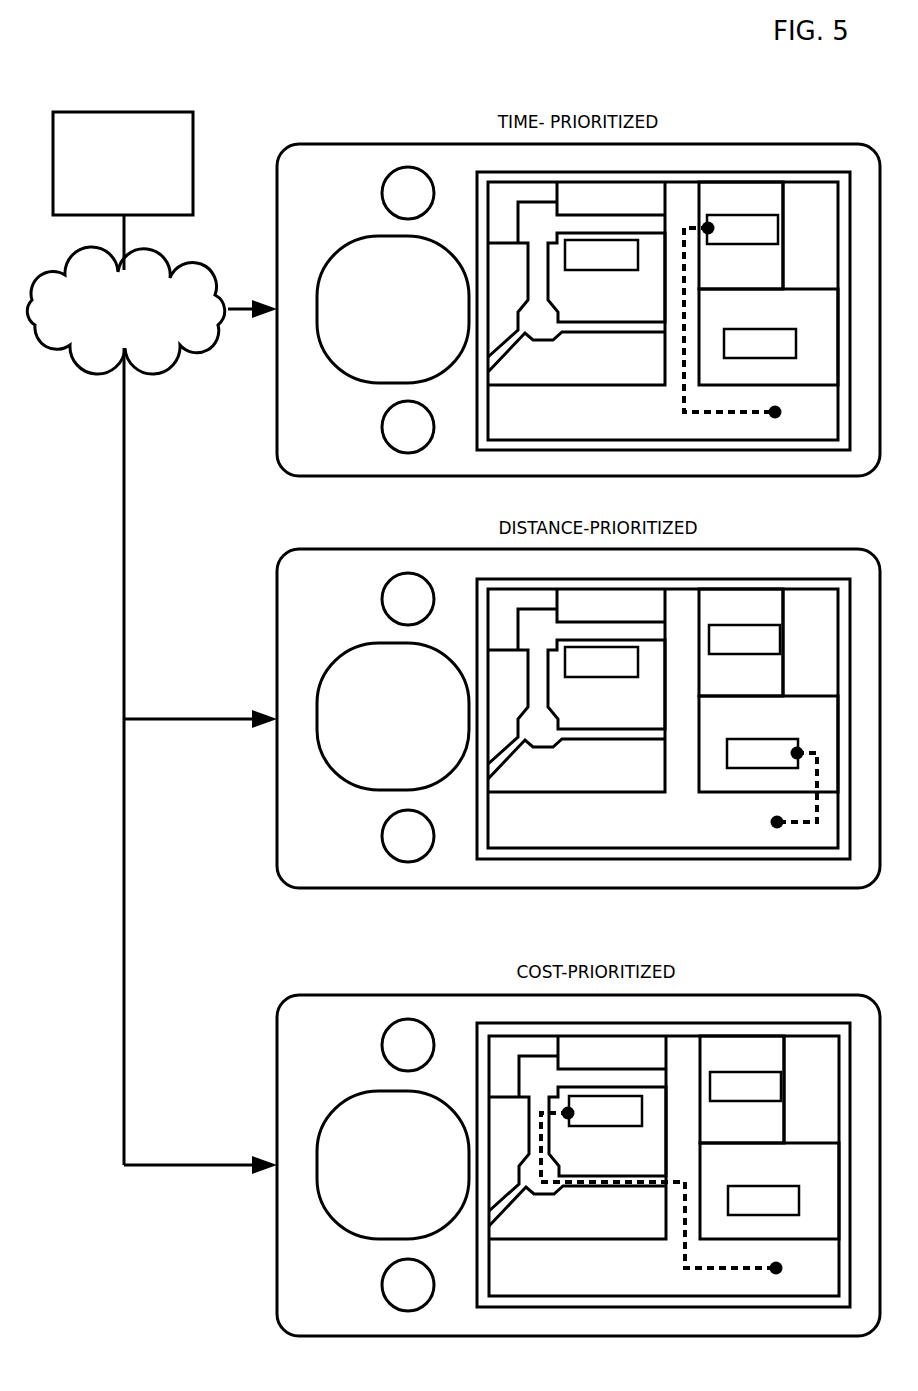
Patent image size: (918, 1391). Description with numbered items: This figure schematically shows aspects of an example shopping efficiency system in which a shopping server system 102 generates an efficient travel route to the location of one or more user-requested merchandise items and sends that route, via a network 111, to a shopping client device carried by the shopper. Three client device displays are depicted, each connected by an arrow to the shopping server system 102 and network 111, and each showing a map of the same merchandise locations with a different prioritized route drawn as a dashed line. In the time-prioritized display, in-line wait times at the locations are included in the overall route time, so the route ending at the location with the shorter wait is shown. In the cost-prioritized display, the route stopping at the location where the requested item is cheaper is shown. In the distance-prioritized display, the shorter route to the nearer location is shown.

The shopping server system 102 is at (180, 203).
The network 111 is at (190, 319).